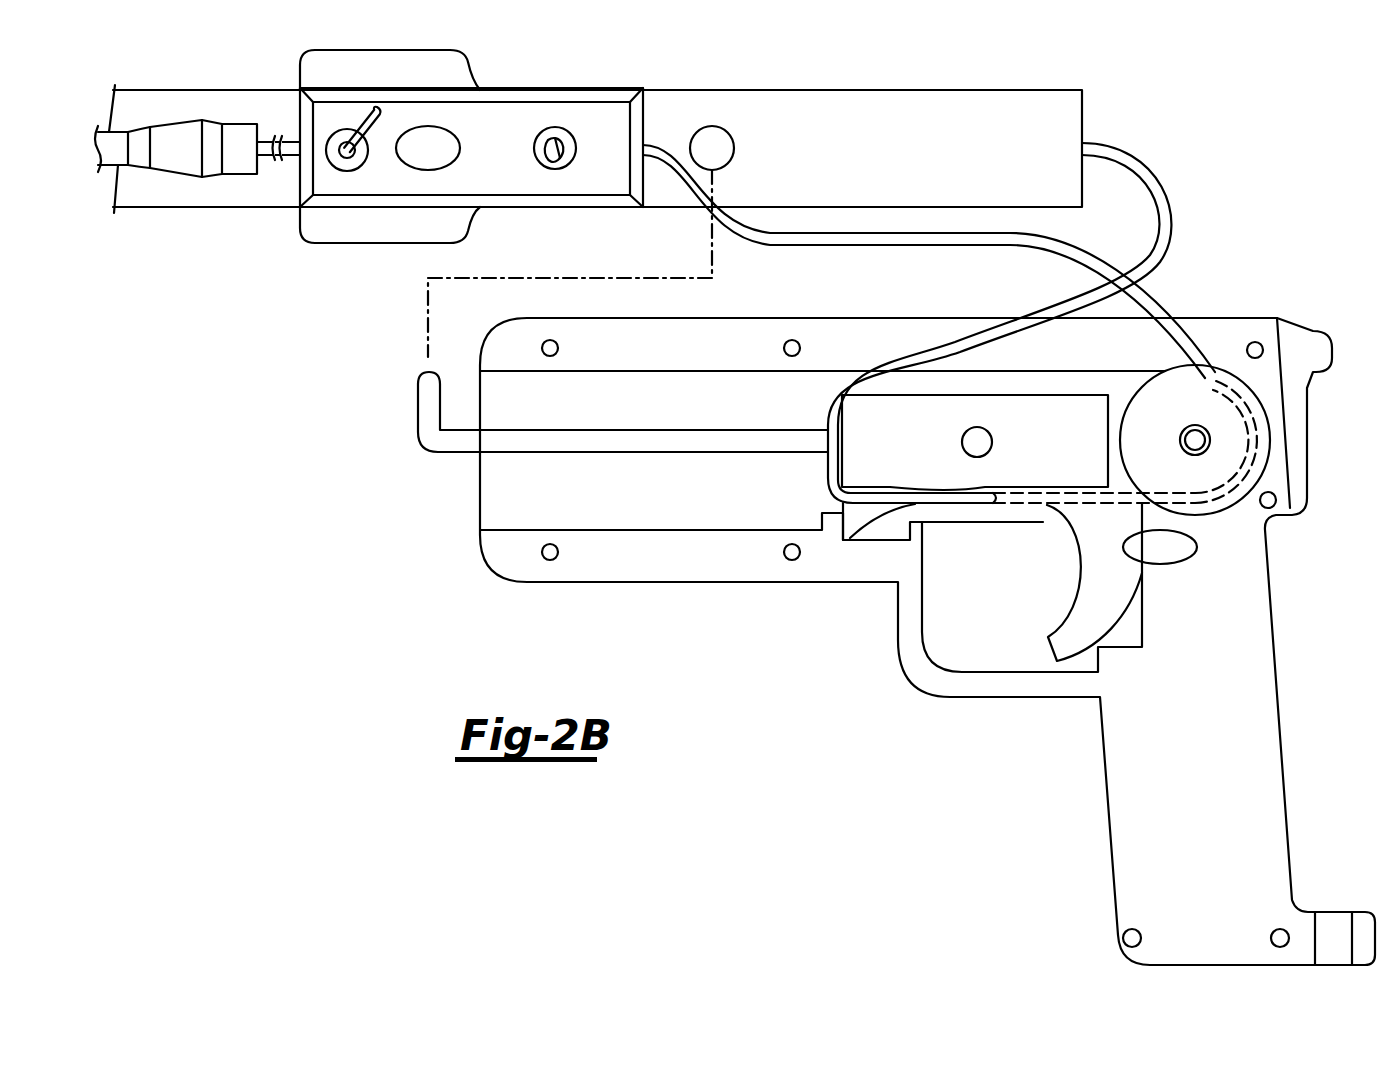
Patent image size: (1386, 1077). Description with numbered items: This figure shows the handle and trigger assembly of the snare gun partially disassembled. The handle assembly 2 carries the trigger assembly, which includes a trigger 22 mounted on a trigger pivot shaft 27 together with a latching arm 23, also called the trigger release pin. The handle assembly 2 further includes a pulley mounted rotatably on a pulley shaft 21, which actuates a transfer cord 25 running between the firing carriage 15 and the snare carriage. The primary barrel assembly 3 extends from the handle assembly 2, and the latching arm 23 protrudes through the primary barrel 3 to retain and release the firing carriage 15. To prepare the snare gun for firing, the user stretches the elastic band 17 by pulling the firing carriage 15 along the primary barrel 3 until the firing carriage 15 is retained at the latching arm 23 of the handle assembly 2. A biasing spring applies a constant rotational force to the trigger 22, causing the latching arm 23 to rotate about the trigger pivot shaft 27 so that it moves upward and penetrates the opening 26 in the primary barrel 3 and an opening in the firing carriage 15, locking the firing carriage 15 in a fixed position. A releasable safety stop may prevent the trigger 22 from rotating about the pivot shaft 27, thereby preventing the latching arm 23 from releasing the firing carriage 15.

The handle assembly 2 is at (1272, 710).
The primary barrel assembly 3 is at (1082, 113).
The firing carriage 15 is at (330, 232).
The elastic band 17 is at (267, 140).
The pulley shaft 21 is at (1195, 440).
The trigger 22 is at (1045, 505).
The latching arm 23 is at (423, 407).
The transfer cord 25 is at (1157, 312).
The opening 26 is at (723, 148).
The trigger pivot shaft 27 is at (977, 445).